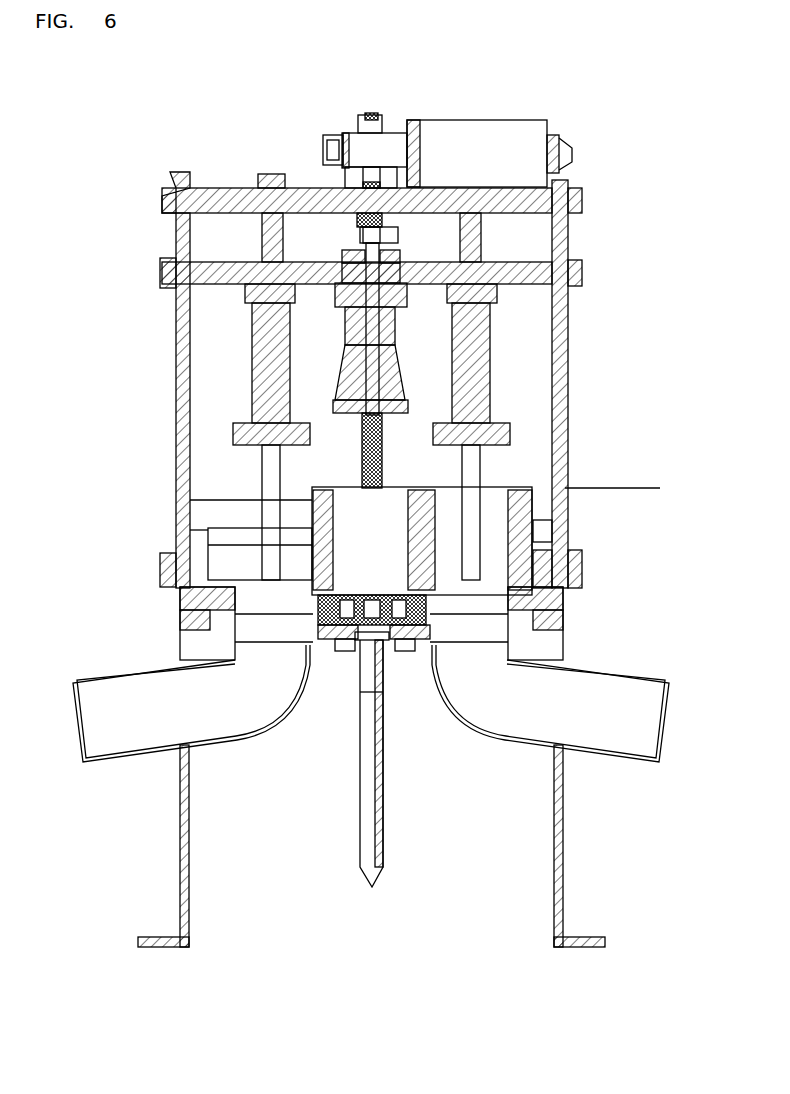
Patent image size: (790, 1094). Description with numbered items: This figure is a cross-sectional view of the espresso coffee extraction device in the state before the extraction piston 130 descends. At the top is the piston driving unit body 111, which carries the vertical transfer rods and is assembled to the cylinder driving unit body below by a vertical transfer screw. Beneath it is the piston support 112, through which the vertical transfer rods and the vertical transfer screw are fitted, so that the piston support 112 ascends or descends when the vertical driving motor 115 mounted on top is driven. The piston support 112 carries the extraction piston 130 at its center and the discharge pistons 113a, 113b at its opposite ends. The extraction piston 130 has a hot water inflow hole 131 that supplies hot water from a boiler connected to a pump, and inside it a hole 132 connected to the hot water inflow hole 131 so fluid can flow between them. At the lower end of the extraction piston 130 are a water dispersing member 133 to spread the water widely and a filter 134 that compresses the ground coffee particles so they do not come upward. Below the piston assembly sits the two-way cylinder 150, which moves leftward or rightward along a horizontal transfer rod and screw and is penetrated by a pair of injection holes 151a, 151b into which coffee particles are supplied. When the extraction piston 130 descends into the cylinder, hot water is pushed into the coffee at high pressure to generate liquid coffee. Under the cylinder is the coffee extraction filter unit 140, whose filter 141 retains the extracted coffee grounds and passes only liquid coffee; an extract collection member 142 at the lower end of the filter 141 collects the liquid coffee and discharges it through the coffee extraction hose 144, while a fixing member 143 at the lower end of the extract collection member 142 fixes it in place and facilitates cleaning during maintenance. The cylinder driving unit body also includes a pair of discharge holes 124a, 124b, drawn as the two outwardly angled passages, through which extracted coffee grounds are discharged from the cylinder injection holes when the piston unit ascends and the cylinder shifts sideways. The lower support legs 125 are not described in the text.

The piston driving unit body 111 is at (230, 188).
The piston support 112 is at (165, 208).
The hot water inflow hole 131 is at (415, 125).
The vertical driving motor 115 is at (506, 142).
The extraction piston 130 is at (578, 270).
The discharge piston 113a is at (254, 305).
The discharge piston 113b is at (485, 305).
The hole 132 is at (350, 310).
The water dispersing member 133 is at (400, 370).
The filter 134 is at (400, 400).
The coffee extraction filter unit 140 is at (312, 489).
The filter 141 is at (365, 600).
The injection hole 151a is at (465, 490).
The injection hole 151b is at (565, 488).
The two-way cylinder 150 is at (537, 552).
The extract collection member 142 is at (408, 651).
The fixing member 143 is at (350, 650).
The coffee extraction hose 144 is at (380, 822).
The discharge hole 124a is at (112, 680).
The discharge hole 124b is at (620, 760).
The support leg 125 is at (562, 835).